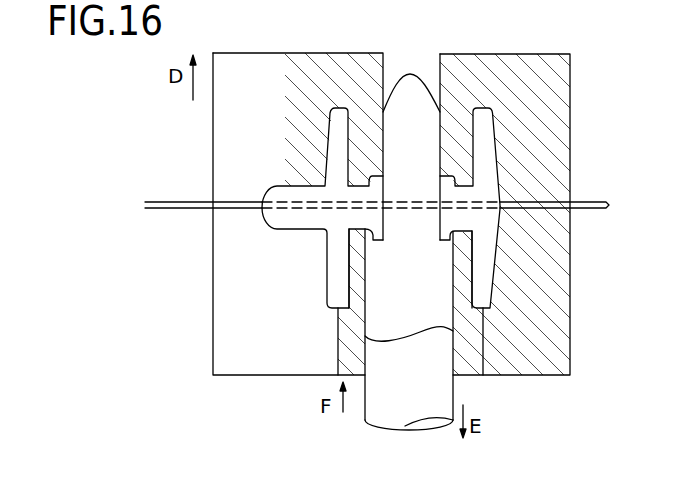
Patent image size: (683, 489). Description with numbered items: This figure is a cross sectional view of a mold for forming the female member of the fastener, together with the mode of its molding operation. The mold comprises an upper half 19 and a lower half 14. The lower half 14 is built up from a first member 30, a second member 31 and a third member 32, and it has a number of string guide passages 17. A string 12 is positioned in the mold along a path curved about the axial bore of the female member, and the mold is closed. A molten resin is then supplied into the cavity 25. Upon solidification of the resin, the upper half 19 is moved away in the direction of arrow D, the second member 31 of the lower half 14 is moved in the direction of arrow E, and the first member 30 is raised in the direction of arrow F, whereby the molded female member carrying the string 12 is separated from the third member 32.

The string 12 is at (181, 202).
The lower half 14 is at (571, 289).
The string guide passages 17 is at (240, 211).
The upper half 19 is at (232, 132).
The cavity 25 is at (342, 236).
The first member 30 is at (355, 370).
The second member 31 is at (417, 408).
The third member 32 is at (265, 361).